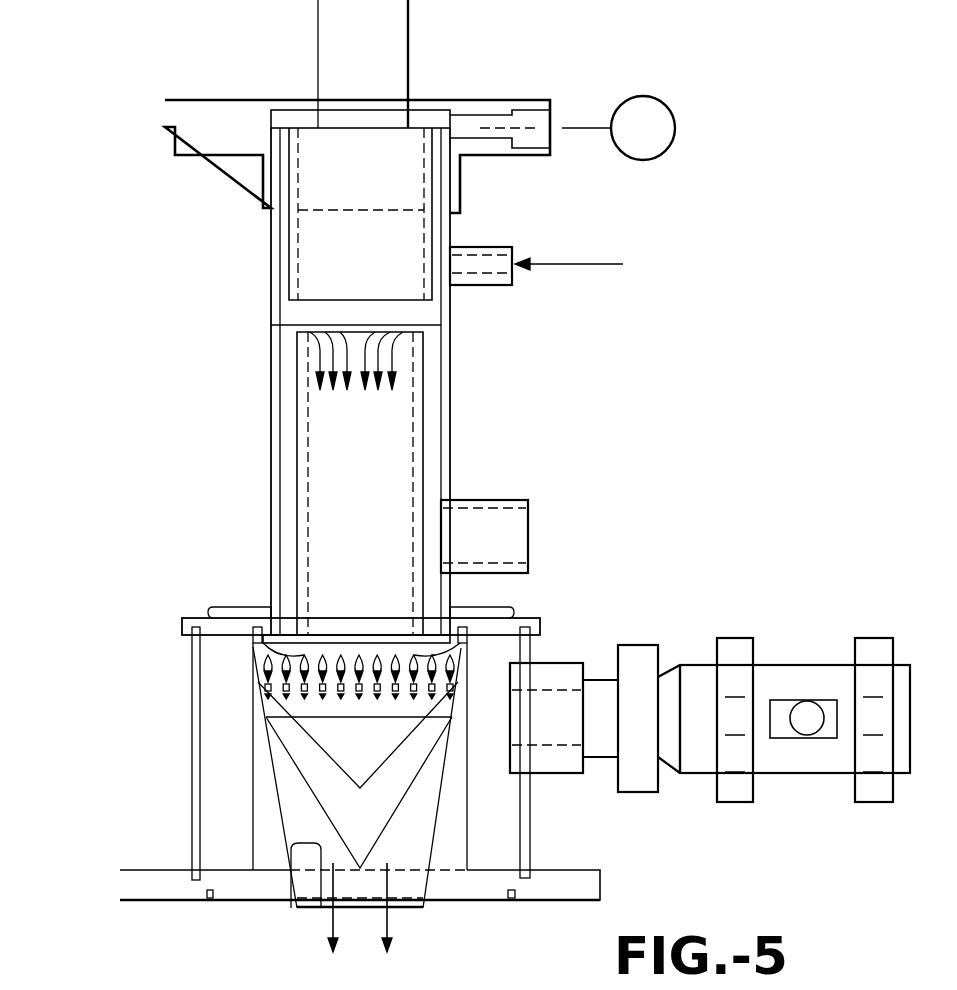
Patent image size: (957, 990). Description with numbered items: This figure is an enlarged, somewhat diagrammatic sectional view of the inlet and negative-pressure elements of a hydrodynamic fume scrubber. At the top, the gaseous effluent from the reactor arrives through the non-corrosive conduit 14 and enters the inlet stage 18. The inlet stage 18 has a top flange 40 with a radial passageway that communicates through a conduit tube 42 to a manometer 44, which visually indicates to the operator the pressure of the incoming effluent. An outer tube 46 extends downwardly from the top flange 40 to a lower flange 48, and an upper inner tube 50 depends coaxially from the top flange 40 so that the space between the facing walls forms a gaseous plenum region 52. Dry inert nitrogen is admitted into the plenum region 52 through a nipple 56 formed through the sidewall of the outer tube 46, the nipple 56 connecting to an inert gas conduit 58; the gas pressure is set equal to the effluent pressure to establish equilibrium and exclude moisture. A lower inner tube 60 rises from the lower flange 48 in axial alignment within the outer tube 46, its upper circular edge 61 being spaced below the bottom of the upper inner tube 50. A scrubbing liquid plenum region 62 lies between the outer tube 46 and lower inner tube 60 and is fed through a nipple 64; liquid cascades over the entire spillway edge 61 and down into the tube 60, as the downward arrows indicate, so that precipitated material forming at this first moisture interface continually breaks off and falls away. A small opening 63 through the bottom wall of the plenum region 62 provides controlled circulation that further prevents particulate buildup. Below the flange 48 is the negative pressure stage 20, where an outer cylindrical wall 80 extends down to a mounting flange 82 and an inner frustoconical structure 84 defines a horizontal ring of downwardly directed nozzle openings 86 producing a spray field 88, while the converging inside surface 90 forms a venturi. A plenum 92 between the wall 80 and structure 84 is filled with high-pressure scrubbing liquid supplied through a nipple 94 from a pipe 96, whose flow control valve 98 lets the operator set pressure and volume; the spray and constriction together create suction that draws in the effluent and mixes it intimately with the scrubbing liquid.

The non-corrosive conduit 14 is at (387, 35).
The inlet stage 18 is at (178, 490).
The negative pressure (suction) stage 20 is at (156, 778).
The top flange 40 is at (473, 107).
The conduit tube 42 is at (583, 128).
The manometer 44 is at (647, 103).
The outer tube 46 is at (280, 290).
The lower flange 48 is at (530, 620).
The upper inner tube 50 is at (318, 200).
The gaseous plenum region 52 is at (427, 313).
The nipple 56 is at (495, 247).
The inert gas conduit 58 is at (553, 264).
The lower inner tube 60 is at (425, 462).
The upper circular edge 61 is at (335, 323).
The scrubbing liquid plenum region 62 is at (435, 413).
The small opening 63 is at (289, 635).
The nipple 64 is at (512, 500).
The outer cylindrical wall 80 is at (530, 818).
The mounting flange 82 is at (575, 870).
The inner frustoconical structure 84 is at (270, 843).
The nozzle openings 86 is at (425, 650).
The spray field 88 is at (382, 802).
The inside surface 90 is at (310, 910).
The plenum 92 is at (223, 720).
The nipple 94 is at (542, 673).
The pipe 96 is at (900, 663).
The flow control valve 98 is at (783, 707).